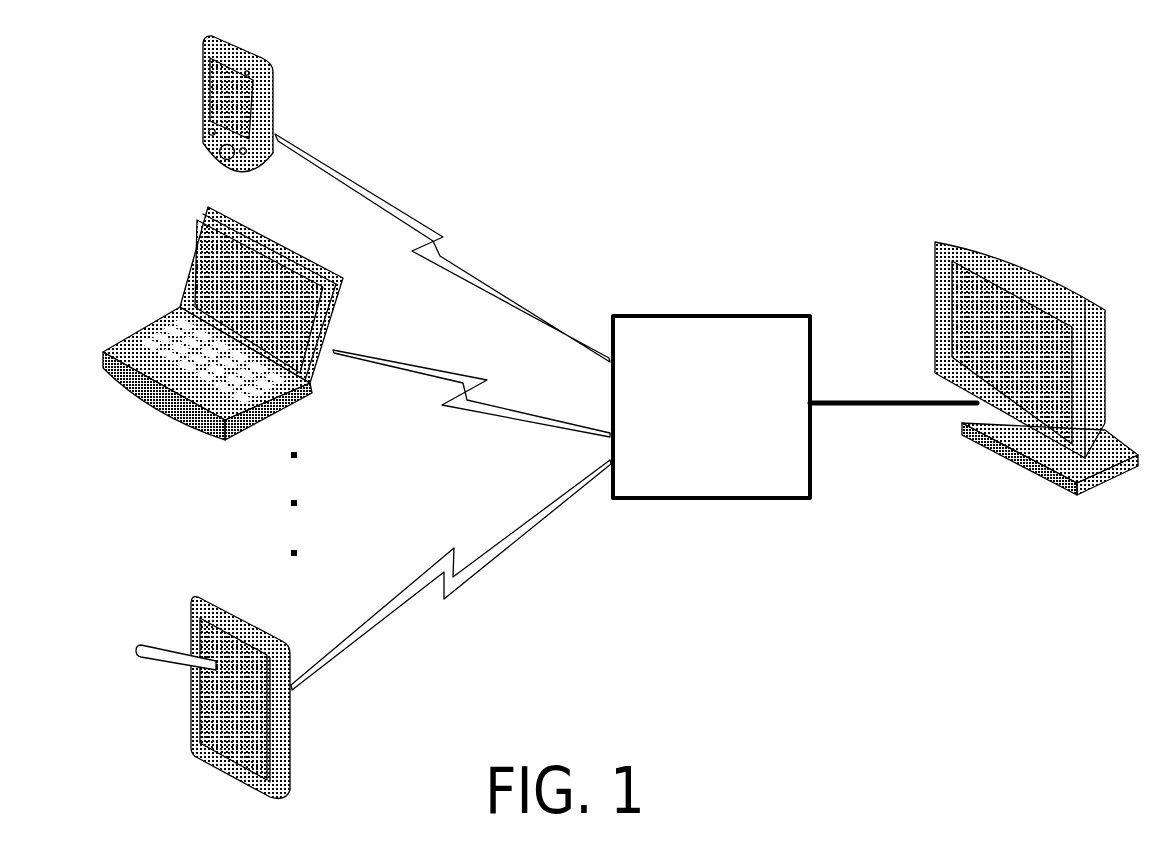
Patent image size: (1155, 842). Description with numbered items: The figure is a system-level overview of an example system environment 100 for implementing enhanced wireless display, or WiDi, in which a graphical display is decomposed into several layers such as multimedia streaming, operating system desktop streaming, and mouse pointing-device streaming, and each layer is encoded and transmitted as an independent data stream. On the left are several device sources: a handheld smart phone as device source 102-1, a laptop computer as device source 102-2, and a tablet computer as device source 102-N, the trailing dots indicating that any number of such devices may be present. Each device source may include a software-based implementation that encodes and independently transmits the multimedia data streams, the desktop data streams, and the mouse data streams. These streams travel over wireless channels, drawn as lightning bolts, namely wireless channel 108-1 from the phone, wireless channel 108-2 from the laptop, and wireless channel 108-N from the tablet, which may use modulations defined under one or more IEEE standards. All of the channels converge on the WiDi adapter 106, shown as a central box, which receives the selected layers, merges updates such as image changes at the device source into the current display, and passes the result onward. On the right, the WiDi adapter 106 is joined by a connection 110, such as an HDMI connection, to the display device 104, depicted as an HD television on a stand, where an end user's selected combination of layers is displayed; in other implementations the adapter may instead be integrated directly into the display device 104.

The system environment 100 is at (598, 69).
The device source 102-1 is at (201, 75).
The device source 102-2 is at (152, 330).
The device source 102-N is at (190, 598).
The display device 104 is at (1007, 251).
The WiDi adapter 106 is at (697, 428).
The wireless channel 108-1 is at (460, 243).
The wireless channel 108-2 is at (415, 367).
The wireless channel 108-N is at (472, 578).
The connection 110 is at (860, 408).